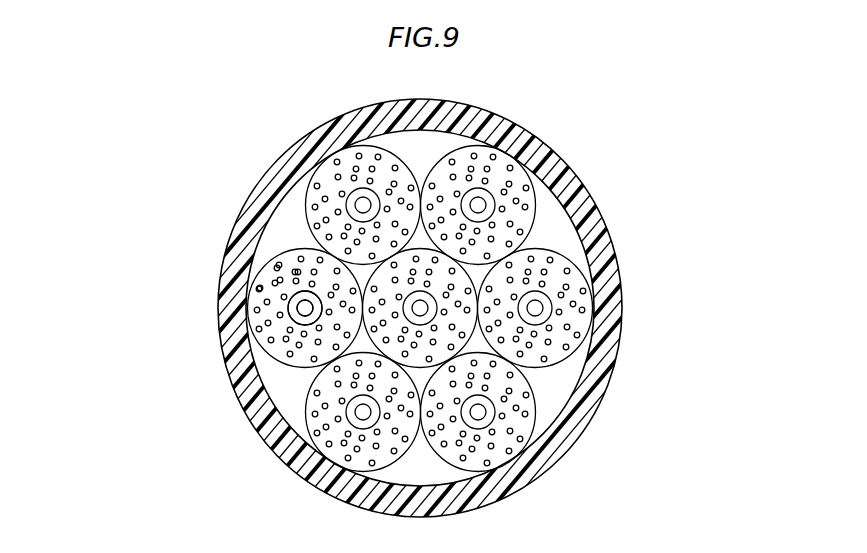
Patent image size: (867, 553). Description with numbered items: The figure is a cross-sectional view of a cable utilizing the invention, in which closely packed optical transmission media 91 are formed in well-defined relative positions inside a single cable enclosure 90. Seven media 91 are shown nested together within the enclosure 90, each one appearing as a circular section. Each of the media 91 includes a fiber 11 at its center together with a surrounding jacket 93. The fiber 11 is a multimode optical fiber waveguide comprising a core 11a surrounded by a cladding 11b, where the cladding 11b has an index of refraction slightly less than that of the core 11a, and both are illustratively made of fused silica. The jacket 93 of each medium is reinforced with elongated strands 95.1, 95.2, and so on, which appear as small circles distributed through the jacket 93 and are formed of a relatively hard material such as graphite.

The enclosure 90 is at (534, 146).
The closely packed optical transmission media 91 is at (427, 331).
The jacket 93 is at (279, 257).
The elongated strand 95.1 is at (272, 283).
The elongated strand 95.2 is at (248, 270).
The fiber 11 is at (288, 305).
The core 11a is at (295, 311).
The cladding 11b is at (292, 320).